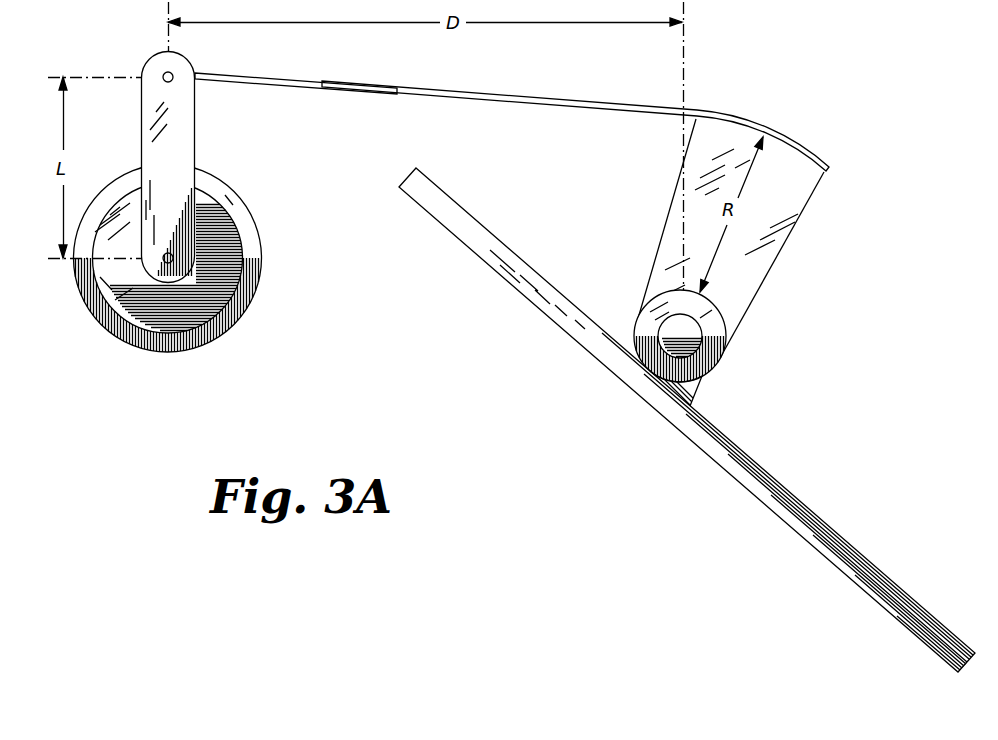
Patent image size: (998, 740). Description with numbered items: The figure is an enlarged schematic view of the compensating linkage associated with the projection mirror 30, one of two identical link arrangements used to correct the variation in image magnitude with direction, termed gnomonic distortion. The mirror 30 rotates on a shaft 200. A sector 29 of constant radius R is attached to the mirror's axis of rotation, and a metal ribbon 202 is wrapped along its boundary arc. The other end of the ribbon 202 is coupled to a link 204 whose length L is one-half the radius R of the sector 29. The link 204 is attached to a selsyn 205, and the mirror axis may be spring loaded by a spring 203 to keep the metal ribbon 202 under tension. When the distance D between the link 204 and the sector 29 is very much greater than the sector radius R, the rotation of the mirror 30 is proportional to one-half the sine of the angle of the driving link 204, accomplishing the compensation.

The sector 29 is at (795, 217).
The projection mirror 30 is at (668, 410).
The shaft 200 is at (693, 345).
The metal ribbon 202 is at (527, 98).
The spring 203 is at (257, 80).
The link 204 is at (193, 142).
The selsyn 205 is at (228, 268).